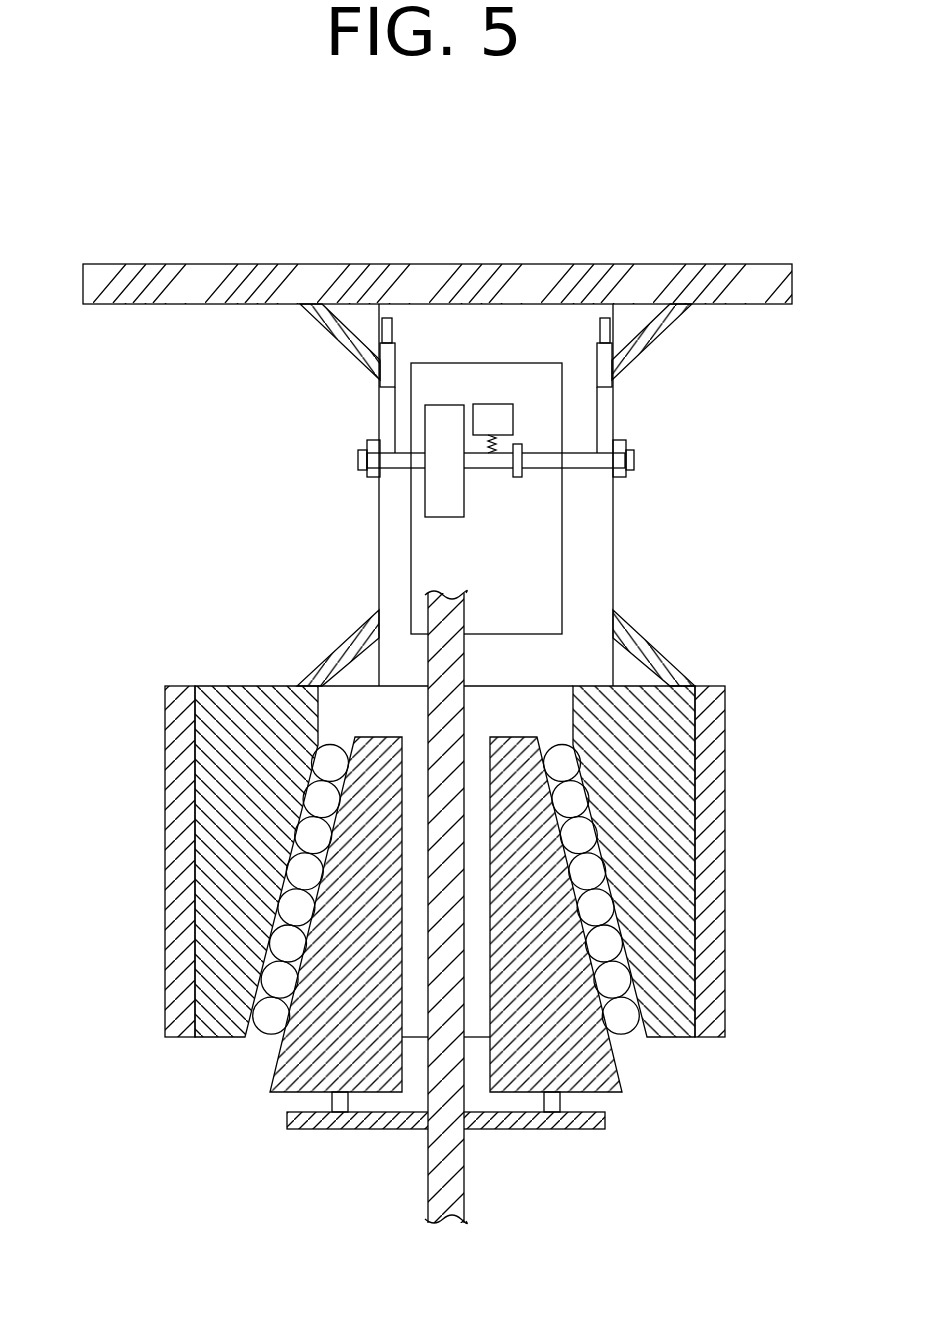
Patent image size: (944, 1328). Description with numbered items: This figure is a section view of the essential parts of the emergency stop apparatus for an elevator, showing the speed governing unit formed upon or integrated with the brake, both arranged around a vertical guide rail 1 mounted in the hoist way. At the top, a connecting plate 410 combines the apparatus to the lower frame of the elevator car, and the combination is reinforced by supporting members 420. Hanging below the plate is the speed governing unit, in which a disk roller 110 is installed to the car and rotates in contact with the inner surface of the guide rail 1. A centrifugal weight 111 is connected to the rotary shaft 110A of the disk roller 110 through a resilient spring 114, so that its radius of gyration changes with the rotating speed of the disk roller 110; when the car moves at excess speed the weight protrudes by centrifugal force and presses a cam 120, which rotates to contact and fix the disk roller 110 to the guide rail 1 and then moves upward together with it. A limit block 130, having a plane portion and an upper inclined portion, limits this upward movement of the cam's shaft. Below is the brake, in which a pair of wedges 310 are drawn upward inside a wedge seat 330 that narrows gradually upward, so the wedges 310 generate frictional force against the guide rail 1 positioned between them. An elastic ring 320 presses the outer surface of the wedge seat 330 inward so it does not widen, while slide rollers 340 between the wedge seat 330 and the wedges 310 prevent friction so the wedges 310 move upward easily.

The guide rail 1 is at (440, 600).
The disk roller 110 is at (443, 482).
The rotary shaft 110A is at (588, 463).
The centrifugal weight 111 is at (505, 413).
The spring 114 is at (478, 453).
The cam 120 is at (428, 388).
The limit block 130 is at (605, 402).
The wedges 310 is at (300, 1063).
The elastic ring 320 is at (182, 949).
The wedge seat 330 is at (243, 840).
The slide rollers 340 is at (323, 804).
The connecting plate 410 is at (187, 278).
The supporting members 420 is at (328, 318).